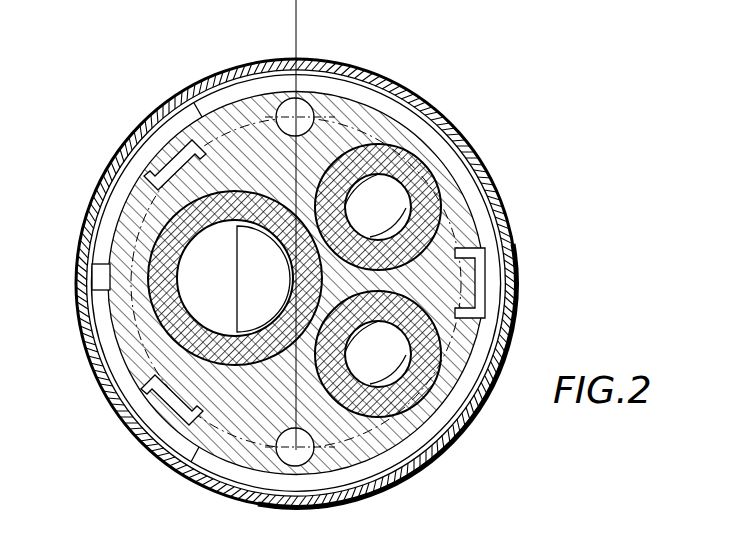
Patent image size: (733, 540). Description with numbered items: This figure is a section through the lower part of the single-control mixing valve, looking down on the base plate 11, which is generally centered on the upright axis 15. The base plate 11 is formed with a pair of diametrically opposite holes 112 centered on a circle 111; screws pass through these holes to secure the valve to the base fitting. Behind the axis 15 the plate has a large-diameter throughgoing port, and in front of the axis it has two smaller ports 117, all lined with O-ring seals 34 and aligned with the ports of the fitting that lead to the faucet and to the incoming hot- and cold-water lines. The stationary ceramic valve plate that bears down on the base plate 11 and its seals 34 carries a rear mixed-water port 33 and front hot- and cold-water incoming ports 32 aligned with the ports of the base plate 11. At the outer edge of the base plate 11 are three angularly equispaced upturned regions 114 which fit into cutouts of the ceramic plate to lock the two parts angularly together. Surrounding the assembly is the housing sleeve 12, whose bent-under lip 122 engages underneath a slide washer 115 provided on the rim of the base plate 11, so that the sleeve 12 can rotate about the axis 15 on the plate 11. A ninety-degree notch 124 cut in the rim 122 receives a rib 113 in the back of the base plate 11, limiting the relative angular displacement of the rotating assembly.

The base plate 11 is at (405, 456).
The housing sleeve 12 is at (500, 240).
The upright axis 15 is at (295, 40).
The hot- and cold-water incoming ports 32 is at (427, 392).
The rear mixed-water port 33 is at (248, 298).
The O-ring seals 34 is at (445, 334).
The circle 111 is at (338, 122).
The holes 112 is at (310, 108).
The rib 113 is at (93, 283).
The upturned regions 114 is at (177, 167).
The slide washer 115 is at (193, 300).
The smaller ports 117 is at (407, 347).
The bent-under lip 122 is at (463, 172).
The notch 124 is at (123, 192).